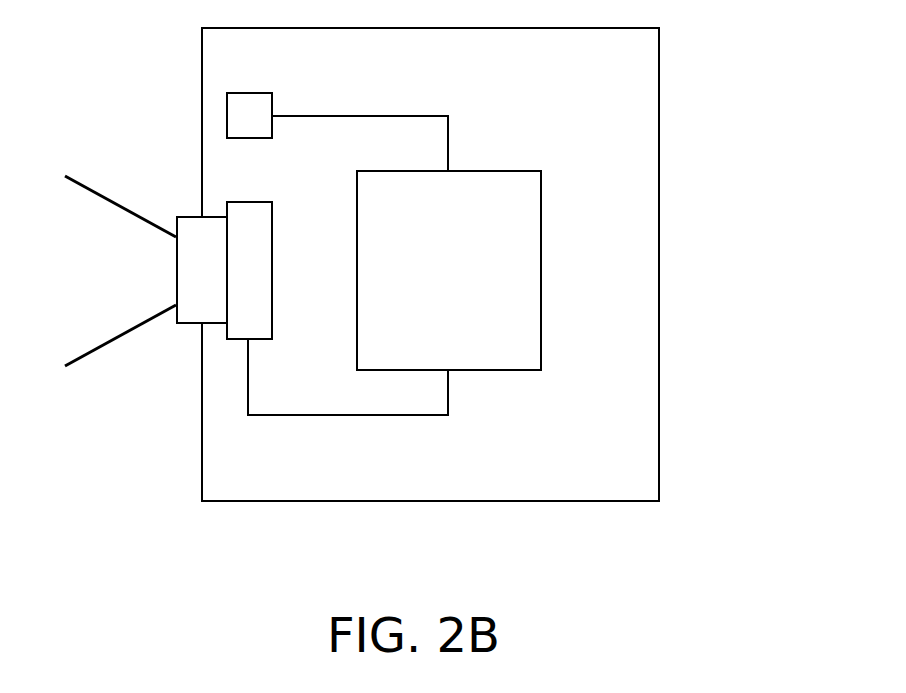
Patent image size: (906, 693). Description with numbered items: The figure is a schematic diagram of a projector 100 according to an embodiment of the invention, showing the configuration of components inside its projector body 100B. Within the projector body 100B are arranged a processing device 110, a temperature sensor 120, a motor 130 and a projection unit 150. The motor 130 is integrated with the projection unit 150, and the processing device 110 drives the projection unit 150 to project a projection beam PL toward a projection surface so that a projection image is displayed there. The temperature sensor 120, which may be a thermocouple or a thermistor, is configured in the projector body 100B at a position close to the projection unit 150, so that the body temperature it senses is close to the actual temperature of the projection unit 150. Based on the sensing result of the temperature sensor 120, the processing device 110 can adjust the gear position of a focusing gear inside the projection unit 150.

The projector body 100B is at (659, 169).
The projector 100 is at (772, 549).
The processing device 110 is at (504, 171).
The temperature sensor 120 is at (250, 93).
The motor 130 is at (237, 330).
The projection unit 150 is at (187, 227).
The projection beam PL is at (90, 226).